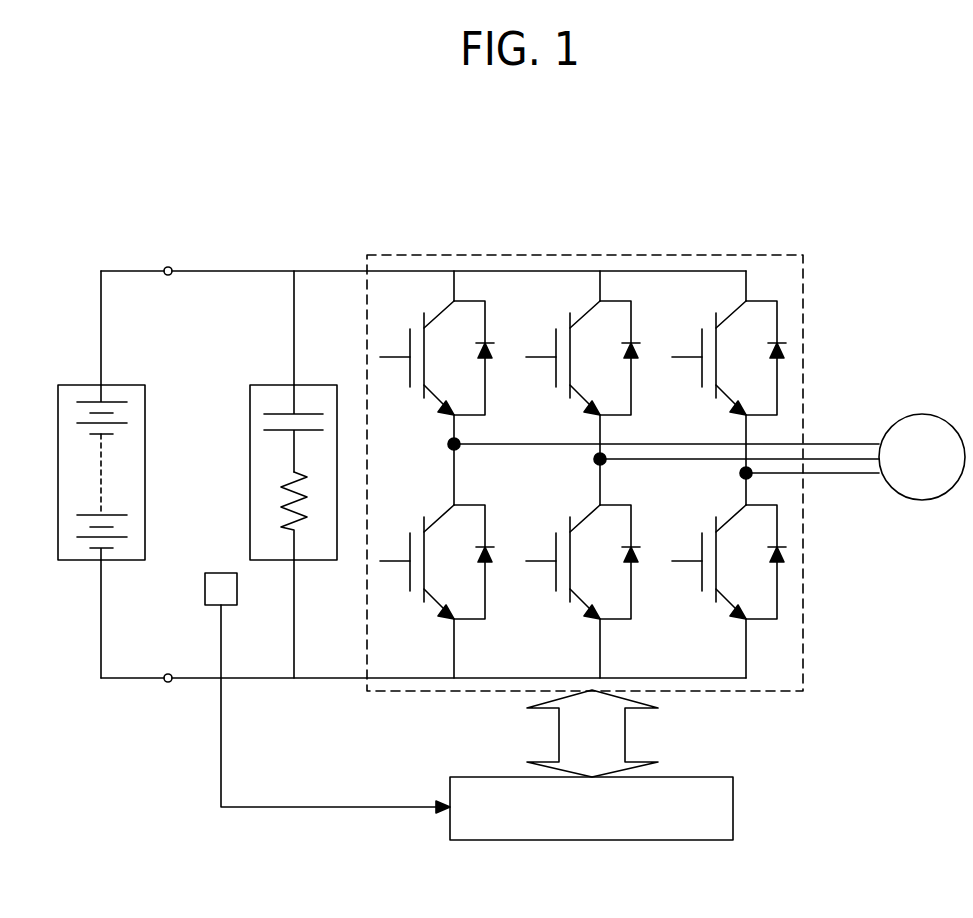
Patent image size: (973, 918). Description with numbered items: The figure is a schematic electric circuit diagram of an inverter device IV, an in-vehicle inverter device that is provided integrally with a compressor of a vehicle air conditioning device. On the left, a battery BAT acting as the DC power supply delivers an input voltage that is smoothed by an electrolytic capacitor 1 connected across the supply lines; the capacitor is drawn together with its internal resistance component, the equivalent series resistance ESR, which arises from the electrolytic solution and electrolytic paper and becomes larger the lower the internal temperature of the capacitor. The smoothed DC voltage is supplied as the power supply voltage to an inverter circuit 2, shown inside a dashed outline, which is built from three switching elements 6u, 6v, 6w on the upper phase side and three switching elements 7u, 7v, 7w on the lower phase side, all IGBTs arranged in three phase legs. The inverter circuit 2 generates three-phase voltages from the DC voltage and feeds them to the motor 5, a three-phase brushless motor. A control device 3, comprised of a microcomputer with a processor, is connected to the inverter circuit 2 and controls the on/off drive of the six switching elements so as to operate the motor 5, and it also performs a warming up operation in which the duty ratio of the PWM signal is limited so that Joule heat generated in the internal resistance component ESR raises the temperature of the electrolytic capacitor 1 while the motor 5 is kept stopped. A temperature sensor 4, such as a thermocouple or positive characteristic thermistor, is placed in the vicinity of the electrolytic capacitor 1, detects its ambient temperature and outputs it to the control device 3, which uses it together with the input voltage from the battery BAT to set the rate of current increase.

The electrolytic capacitor 1 is at (313, 386).
The inverter circuit 2 is at (803, 256).
The control device 3 is at (733, 803).
The temperature sensor 4 is at (237, 592).
The motor 5 is at (920, 432).
The switching element on the upper phase side 6u is at (408, 298).
The switching element on the upper phase side 6v is at (563, 298).
The switching element on the upper phase side 6w is at (711, 298).
The switching element on the lower phase side 7u is at (408, 612).
The switching element on the lower phase side 7v is at (553, 612).
The switching element on the lower phase side 7w is at (700, 614).
The battery BAT is at (122, 386).
The internal resistance component (equivalent series resistance) ESR is at (297, 525).
The inverter device IV is at (628, 215).